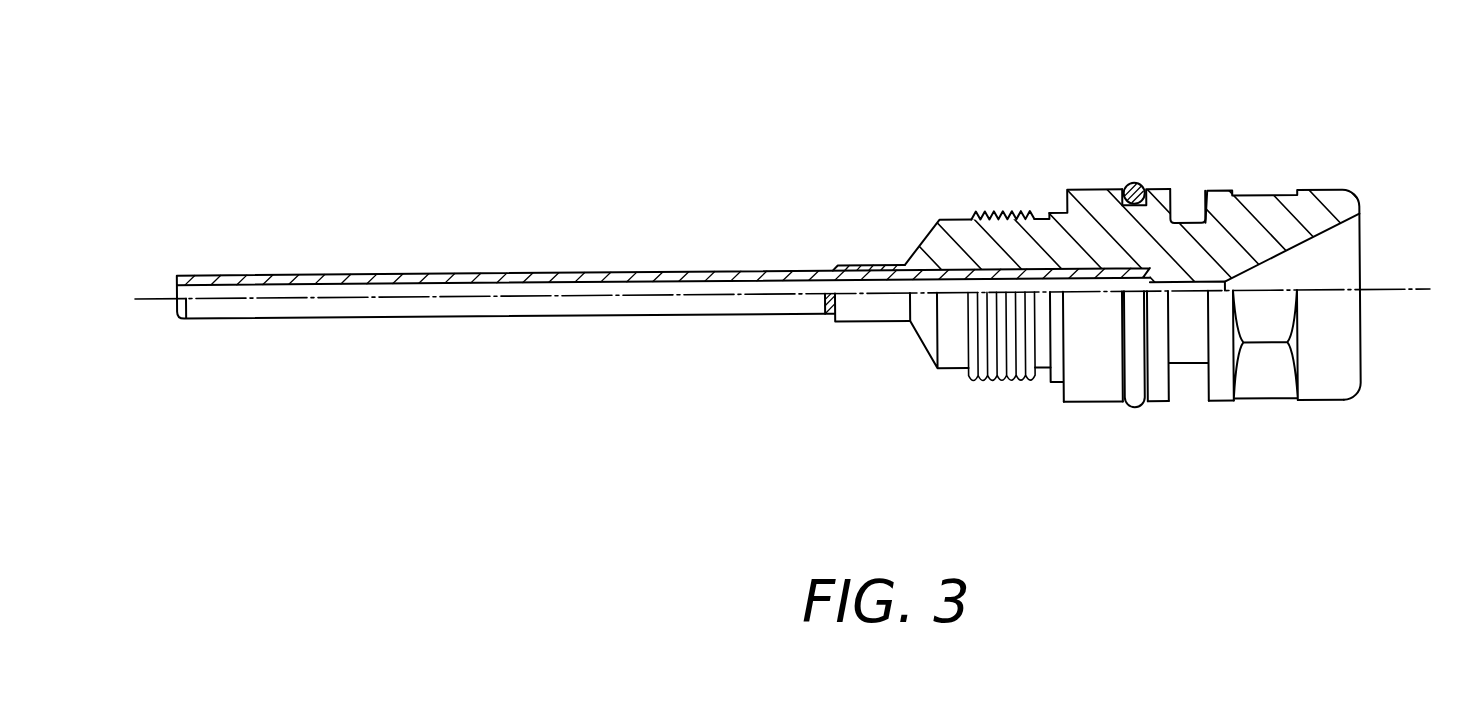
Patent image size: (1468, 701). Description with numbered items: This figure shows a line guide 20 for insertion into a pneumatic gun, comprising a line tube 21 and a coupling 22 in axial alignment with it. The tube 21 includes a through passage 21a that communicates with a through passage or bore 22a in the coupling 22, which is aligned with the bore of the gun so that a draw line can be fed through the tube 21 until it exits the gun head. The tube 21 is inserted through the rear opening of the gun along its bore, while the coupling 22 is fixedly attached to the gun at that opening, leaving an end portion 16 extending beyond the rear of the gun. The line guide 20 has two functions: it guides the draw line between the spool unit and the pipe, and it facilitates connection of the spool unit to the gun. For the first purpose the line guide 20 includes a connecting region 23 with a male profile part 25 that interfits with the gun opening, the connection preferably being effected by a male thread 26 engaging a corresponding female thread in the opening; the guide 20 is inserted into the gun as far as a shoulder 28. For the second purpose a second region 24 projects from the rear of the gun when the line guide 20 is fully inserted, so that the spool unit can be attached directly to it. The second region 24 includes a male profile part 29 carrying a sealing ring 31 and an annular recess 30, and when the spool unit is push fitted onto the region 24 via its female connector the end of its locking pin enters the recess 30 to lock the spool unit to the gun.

The end portion 16 is at (1340, 381).
The line guide 20 is at (801, 313).
The line tube 21 is at (423, 313).
The through passage 21a is at (483, 290).
The coupling 22 is at (1292, 130).
The bore 22a is at (1335, 268).
The connecting region 23 is at (836, 433).
The second region 24 is at (1355, 433).
The male profile part 25 is at (943, 218).
The male thread 26 is at (990, 212).
The shoulder 28 is at (1053, 207).
The male profile part 29 is at (1336, 200).
The annular recess 30 is at (1187, 215).
The sealing ring 31 is at (1135, 190).